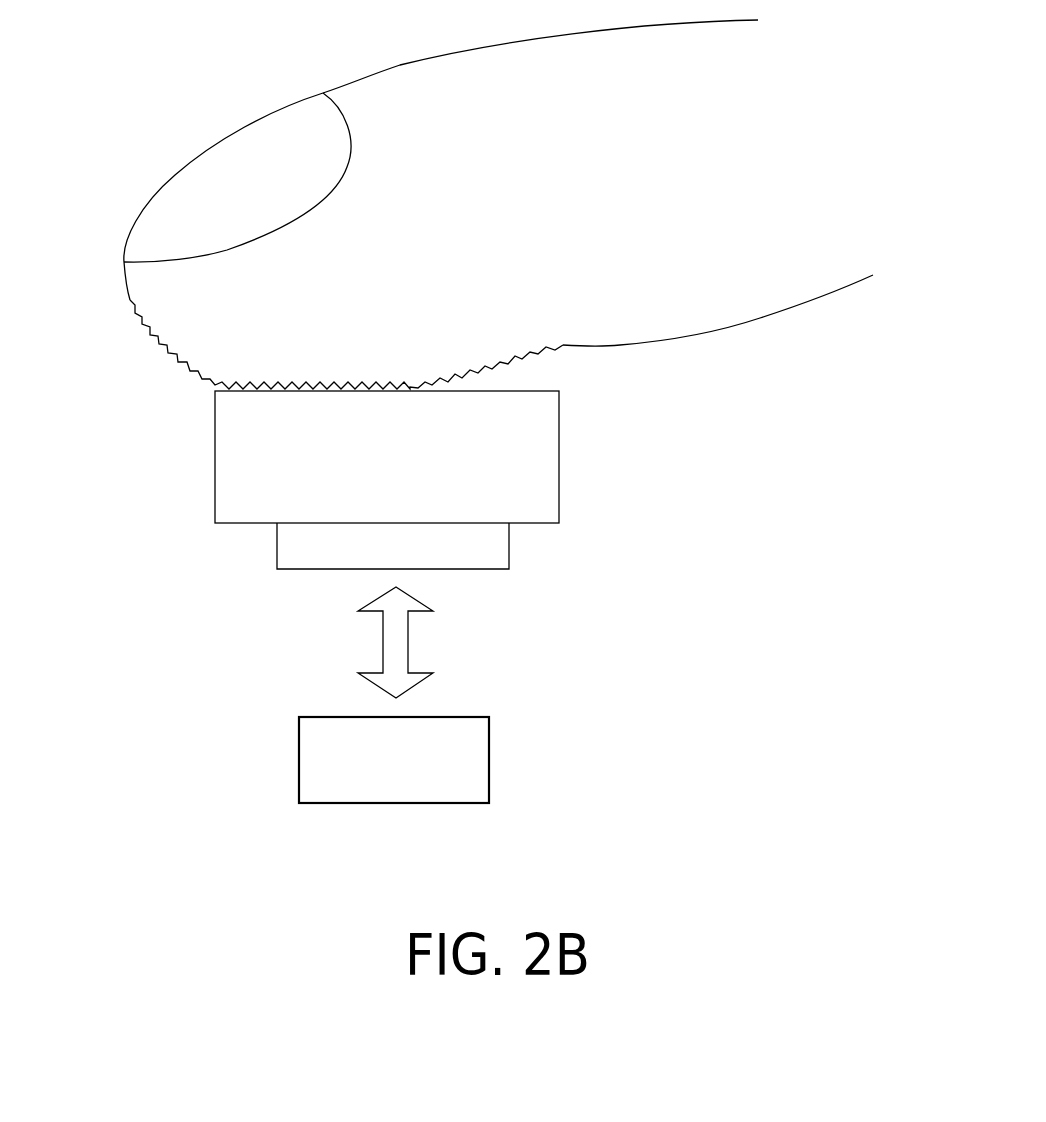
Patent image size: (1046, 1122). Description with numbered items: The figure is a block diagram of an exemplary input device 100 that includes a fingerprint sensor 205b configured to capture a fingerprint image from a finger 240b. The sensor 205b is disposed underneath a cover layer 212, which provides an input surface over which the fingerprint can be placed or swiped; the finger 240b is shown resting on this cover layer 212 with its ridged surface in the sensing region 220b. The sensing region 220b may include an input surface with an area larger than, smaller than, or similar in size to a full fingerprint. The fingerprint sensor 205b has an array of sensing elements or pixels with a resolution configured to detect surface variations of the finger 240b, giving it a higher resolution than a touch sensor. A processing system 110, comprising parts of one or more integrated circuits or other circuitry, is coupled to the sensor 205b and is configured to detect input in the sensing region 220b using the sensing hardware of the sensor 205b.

The input device 100 is at (169, 88).
The processing system 110 is at (299, 765).
The cover layer 212 is at (560, 477).
The fingerprint sensor 205b is at (509, 556).
The sensing region 220b is at (168, 372).
The finger 240b is at (748, 325).